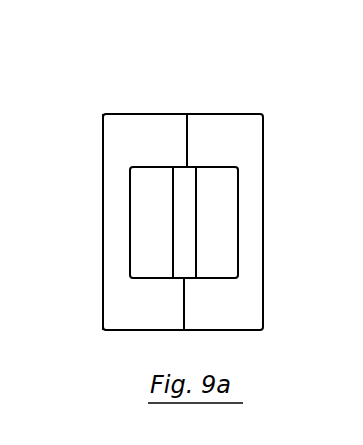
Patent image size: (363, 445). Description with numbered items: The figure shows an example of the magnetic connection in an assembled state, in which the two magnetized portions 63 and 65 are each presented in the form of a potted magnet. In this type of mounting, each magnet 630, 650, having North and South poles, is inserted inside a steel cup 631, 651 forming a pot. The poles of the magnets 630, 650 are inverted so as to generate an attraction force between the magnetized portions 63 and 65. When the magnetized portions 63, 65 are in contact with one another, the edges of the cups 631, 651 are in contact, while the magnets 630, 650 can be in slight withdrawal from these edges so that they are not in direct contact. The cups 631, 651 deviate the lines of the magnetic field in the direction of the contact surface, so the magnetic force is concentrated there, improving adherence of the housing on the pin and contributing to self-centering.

The magnetized portion 65 is at (130, 89).
The steel cup 651 is at (112, 147).
The magnet 650 is at (147, 254).
The magnetized portion 63 is at (236, 98).
The steel cup 631 is at (247, 137).
The magnet 630 is at (222, 247).